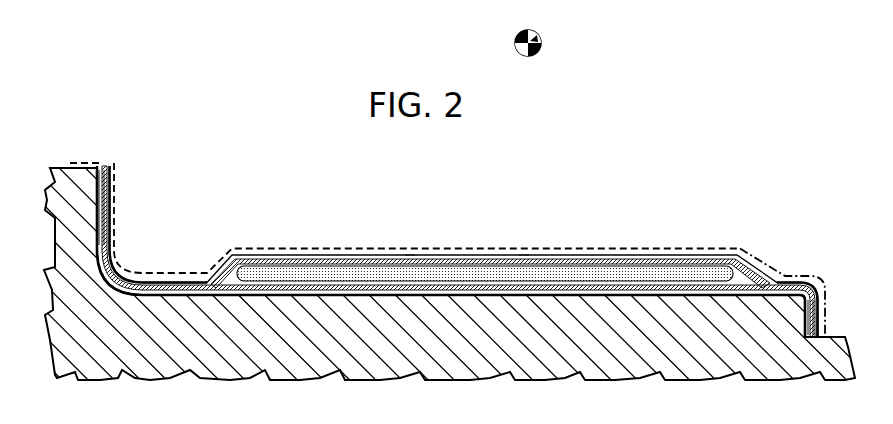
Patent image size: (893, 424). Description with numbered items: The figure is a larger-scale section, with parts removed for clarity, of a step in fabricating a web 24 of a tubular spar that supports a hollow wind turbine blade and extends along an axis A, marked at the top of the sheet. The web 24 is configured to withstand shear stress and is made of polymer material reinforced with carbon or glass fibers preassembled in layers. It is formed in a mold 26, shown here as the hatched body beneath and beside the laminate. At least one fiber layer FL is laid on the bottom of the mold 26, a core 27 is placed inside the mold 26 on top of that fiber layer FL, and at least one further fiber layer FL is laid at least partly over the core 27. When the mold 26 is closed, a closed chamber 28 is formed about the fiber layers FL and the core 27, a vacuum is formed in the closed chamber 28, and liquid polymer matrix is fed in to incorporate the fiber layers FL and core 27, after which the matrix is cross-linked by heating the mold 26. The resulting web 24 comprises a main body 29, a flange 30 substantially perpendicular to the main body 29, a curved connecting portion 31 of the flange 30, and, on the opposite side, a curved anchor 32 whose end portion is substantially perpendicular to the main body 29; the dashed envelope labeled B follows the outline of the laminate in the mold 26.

The web 24 is at (720, 243).
The mold 26 is at (148, 330).
The core 27 is at (584, 257).
The closed chamber 28 is at (355, 247).
The main body 29 is at (270, 272).
The flange 30 is at (823, 318).
The curved connecting portion 31 is at (819, 283).
The curved anchor 32 is at (110, 222).
The fiber layer FL is at (410, 257).
The axis A is at (541, 37).
The boundary line B is at (688, 246).